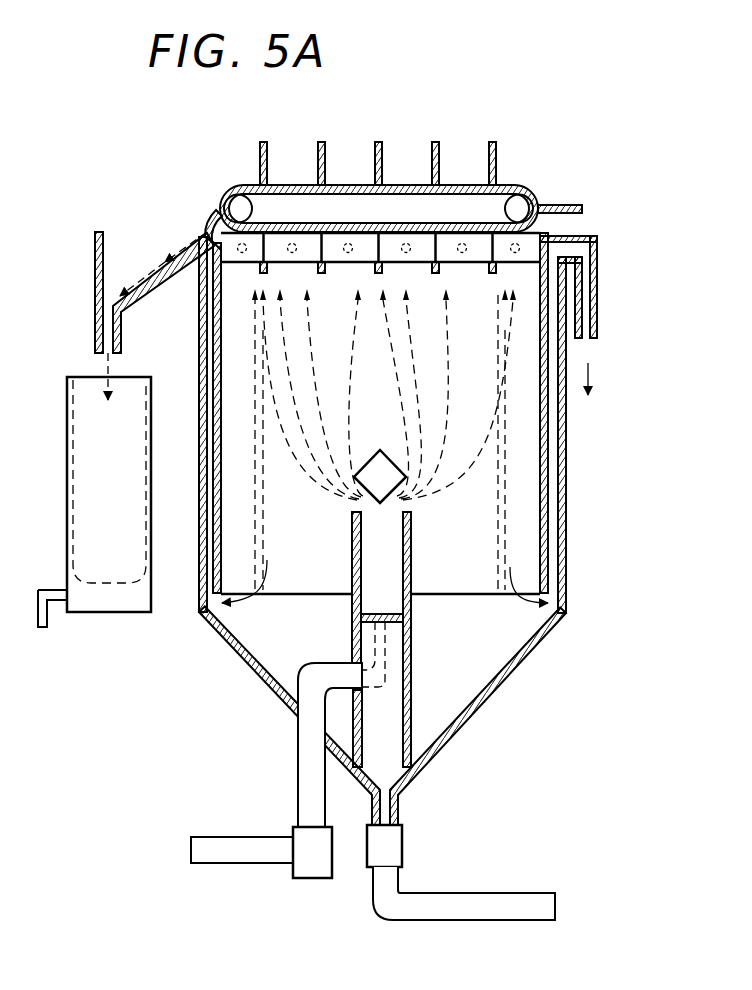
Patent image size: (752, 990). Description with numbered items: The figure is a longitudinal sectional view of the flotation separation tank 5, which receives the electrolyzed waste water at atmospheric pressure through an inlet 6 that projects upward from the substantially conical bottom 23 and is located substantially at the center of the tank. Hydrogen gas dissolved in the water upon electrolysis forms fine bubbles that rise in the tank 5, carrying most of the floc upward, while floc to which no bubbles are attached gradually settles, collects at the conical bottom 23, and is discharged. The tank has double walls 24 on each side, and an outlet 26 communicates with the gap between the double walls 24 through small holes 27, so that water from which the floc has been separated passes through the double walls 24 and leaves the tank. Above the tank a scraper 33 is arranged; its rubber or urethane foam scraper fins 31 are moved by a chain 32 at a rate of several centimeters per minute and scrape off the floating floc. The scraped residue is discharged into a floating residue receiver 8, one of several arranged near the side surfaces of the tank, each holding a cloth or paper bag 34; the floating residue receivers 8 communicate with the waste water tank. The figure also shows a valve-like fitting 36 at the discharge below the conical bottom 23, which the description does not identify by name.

The flotation separation tank 5 is at (585, 412).
The inlet 6 is at (358, 576).
The floating residue receiver 8 is at (68, 530).
The conical bottom 23 is at (520, 666).
The double walls 24 is at (548, 498).
The outlet 26 is at (586, 338).
The small holes 27 is at (520, 246).
The scraper fins 31 is at (320, 165).
The chain 32 is at (232, 198).
The scraper 33 is at (234, 148).
The bag 34 is at (73, 452).
The outlet valve 36 is at (392, 852).